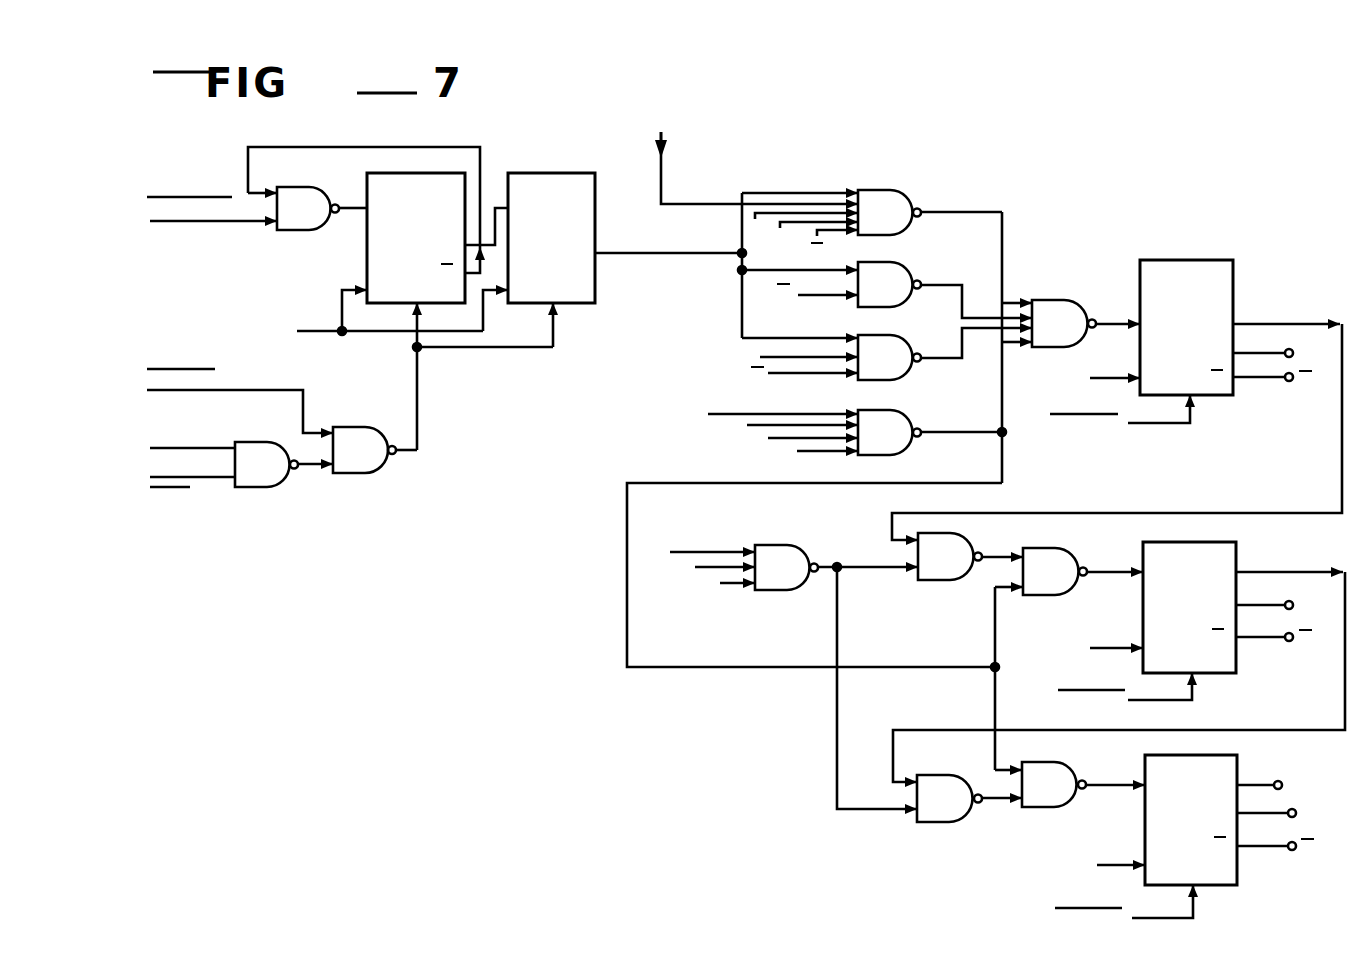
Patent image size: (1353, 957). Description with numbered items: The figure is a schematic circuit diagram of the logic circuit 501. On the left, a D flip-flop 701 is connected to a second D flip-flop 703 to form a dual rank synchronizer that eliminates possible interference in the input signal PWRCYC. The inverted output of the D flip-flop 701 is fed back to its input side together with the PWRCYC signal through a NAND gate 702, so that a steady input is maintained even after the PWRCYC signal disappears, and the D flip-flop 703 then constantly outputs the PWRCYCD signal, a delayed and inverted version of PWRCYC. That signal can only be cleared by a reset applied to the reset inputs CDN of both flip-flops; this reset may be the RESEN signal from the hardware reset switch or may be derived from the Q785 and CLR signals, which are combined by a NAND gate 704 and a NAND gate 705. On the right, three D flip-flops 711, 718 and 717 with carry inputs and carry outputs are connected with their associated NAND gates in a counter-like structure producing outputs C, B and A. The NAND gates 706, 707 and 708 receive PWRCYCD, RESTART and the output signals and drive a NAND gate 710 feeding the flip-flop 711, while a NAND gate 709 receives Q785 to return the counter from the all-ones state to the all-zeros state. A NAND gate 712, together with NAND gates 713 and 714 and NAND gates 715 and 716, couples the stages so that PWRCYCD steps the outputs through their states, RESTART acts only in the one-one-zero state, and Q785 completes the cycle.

The logic circuit 501 is at (960, 125).
The D flip-flop 701 is at (452, 212).
The NAND gate 702 is at (320, 219).
The D flip-flop 703 is at (582, 212).
The NAND gate 704 is at (279, 475).
The NAND gate 705 is at (376, 461).
The NAND gate 706 is at (901, 223).
The NAND gate 707 is at (901, 295).
The NAND gate 708 is at (901, 368).
The NAND gate 709 is at (901, 443).
The NAND gate 710 is at (1075, 334).
The D flip-flop 711 is at (1205, 291).
The NAND gate 712 is at (798, 578).
The NAND gate 713 is at (961, 567).
The NAND gate 714 is at (1066, 582).
The NAND gate 715 is at (960, 809).
The NAND gate 716 is at (1065, 795).
The D flip-flop 717 is at (1200, 827).
The D flip-flop 718 is at (1195, 616).